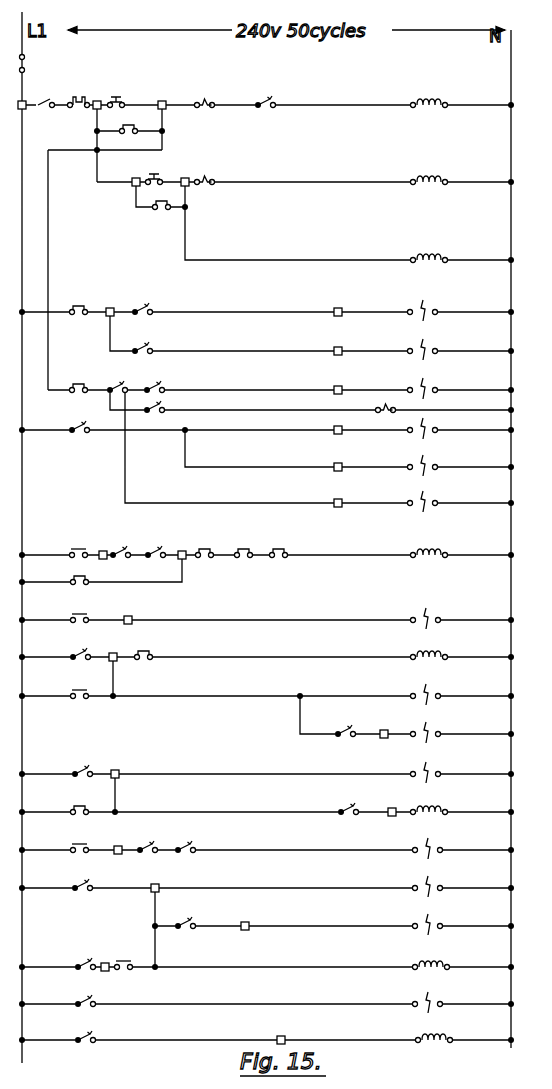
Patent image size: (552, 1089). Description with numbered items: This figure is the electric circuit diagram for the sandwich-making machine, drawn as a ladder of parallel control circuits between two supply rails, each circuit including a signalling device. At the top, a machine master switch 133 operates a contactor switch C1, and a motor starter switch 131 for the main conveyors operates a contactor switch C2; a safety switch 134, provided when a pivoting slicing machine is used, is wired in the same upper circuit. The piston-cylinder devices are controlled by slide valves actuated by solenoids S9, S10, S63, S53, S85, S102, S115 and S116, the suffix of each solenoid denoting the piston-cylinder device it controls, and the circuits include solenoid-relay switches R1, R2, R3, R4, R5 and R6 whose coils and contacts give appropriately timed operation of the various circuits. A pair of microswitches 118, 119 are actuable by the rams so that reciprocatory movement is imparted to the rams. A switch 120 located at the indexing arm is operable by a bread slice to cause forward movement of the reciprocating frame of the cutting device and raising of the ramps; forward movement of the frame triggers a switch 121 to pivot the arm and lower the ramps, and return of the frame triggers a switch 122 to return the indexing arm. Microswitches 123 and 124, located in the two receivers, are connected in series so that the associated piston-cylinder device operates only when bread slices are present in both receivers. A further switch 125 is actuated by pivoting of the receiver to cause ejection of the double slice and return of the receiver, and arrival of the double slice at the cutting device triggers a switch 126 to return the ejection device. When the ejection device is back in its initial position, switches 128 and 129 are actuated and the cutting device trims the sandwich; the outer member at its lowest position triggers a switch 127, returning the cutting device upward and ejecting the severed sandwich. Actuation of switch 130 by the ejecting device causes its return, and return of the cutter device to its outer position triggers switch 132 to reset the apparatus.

The microswitch 118 is at (141, 306).
The microswitch 119 is at (143, 345).
The switch 120 is at (154, 384).
The switch 121 is at (79, 433).
The switch 122 is at (118, 379).
The microswitch 123 is at (118, 549).
The microswitch 124 is at (156, 549).
The switch 125 is at (82, 653).
The switch 126 is at (82, 770).
The switch 127 is at (83, 883).
The switch 128 is at (142, 846).
The switch 129 is at (182, 846).
The switch 130 is at (86, 962).
The motor starter switch 131 is at (165, 177).
The switch 132 is at (84, 1038).
The machine master switch 133 is at (116, 99).
The safety switch 134 is at (266, 98).
The contactor switch C1 is at (424, 96).
The contactor switch C2 is at (424, 173).
The solenoid-relay switch R1 is at (438, 258).
The solenoid-relay switch R2 is at (73, 592).
The solenoid-relay switch R3 is at (427, 672).
The solenoid-relay switch R4 is at (427, 827).
The solenoid-relay switch R5 is at (427, 982).
The solenoid-relay switch R6 is at (444, 1038).
The solenoid S9 is at (416, 305).
The solenoid S10 is at (416, 344).
The solenoid S63 is at (416, 383).
The solenoid S53 is at (389, 495).
The solenoid S85 is at (394, 657).
The solenoid S102 is at (399, 752).
The solenoid S115 is at (389, 875).
The solenoid S116 is at (386, 973).